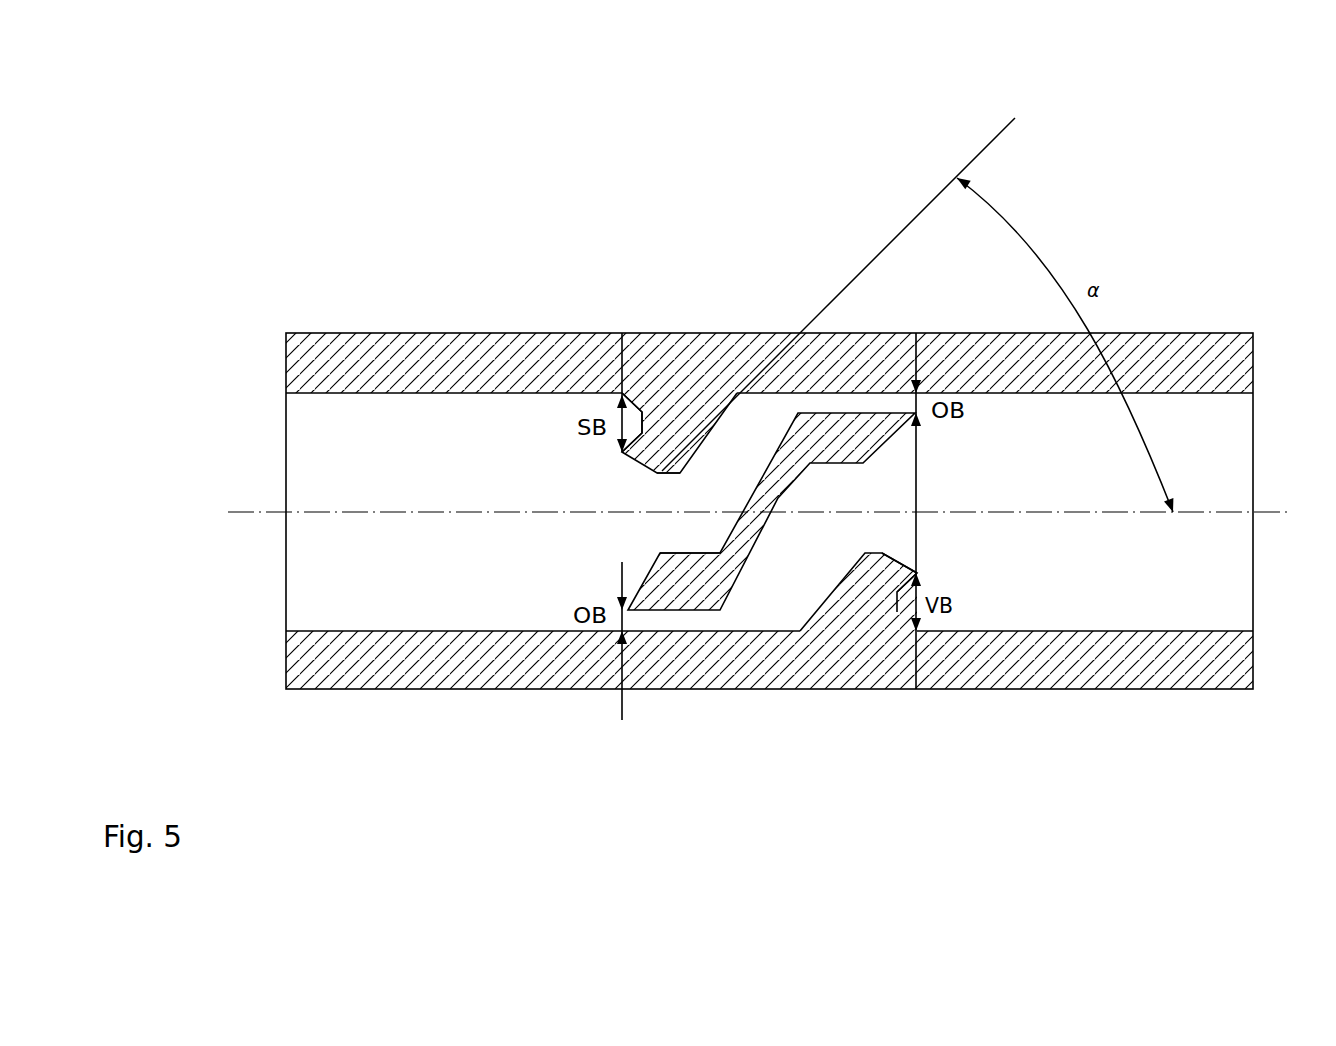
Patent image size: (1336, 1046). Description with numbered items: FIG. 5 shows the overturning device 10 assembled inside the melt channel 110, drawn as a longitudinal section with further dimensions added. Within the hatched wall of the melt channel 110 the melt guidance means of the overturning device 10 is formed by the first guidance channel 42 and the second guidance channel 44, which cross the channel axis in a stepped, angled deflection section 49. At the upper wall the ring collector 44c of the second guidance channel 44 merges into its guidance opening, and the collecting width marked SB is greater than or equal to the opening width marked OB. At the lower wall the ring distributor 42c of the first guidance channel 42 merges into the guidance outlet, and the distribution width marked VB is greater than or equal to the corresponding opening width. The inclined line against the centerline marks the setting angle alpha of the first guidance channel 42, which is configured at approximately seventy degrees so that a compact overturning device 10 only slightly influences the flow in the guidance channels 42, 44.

The overturning device 10 is at (739, 233).
The melt channel 110 is at (327, 333).
The first guidance channel 42 is at (722, 468).
The ring distributor 42c is at (901, 603).
The second guidance channel 44 is at (778, 592).
The ring collector 44c is at (634, 416).
The deflection section 49 is at (676, 484).